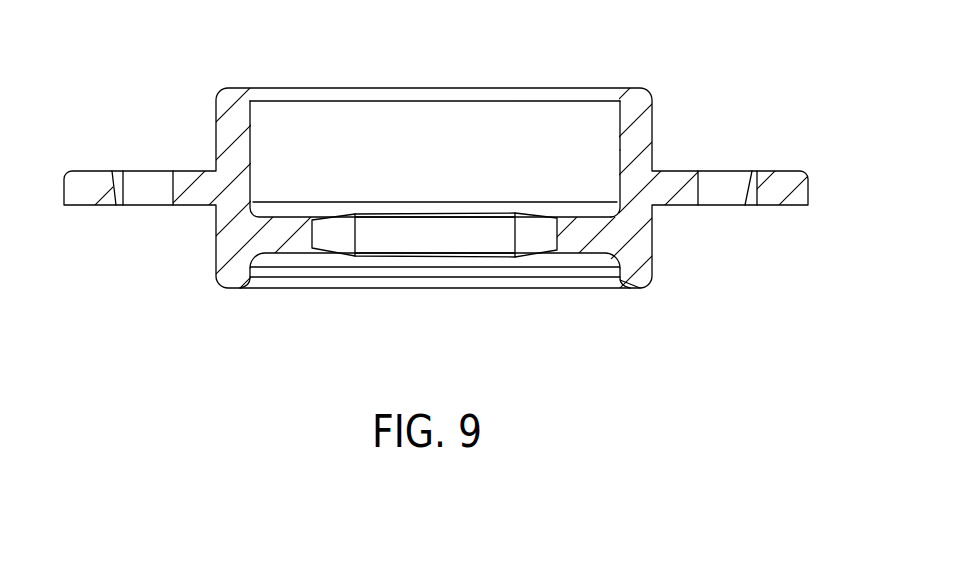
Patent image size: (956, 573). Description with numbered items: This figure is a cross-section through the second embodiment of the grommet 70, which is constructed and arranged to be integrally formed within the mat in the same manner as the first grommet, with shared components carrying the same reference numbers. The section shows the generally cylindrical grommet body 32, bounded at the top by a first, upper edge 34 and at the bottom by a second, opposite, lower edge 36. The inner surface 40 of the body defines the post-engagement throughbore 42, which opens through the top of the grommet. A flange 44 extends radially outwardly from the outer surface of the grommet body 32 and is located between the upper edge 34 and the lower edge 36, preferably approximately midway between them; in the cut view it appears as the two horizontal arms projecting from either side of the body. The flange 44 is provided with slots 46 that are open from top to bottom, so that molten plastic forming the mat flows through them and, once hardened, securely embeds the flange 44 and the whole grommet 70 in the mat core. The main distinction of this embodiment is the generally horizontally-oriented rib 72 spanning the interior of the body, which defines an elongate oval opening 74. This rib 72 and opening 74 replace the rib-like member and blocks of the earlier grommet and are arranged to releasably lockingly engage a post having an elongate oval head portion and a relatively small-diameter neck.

The grommet 70 is at (230, 78).
The post-engagement throughbore 42 is at (462, 115).
The upper edge 34 is at (638, 88).
The grommet body 32 is at (640, 138).
The rib 72 is at (287, 215).
The elongate oval opening 74 is at (382, 240).
The inner surface 40 is at (605, 275).
The lower edge 36 is at (640, 290).
The flange 44 is at (92, 190).
The slots 46 is at (150, 190).